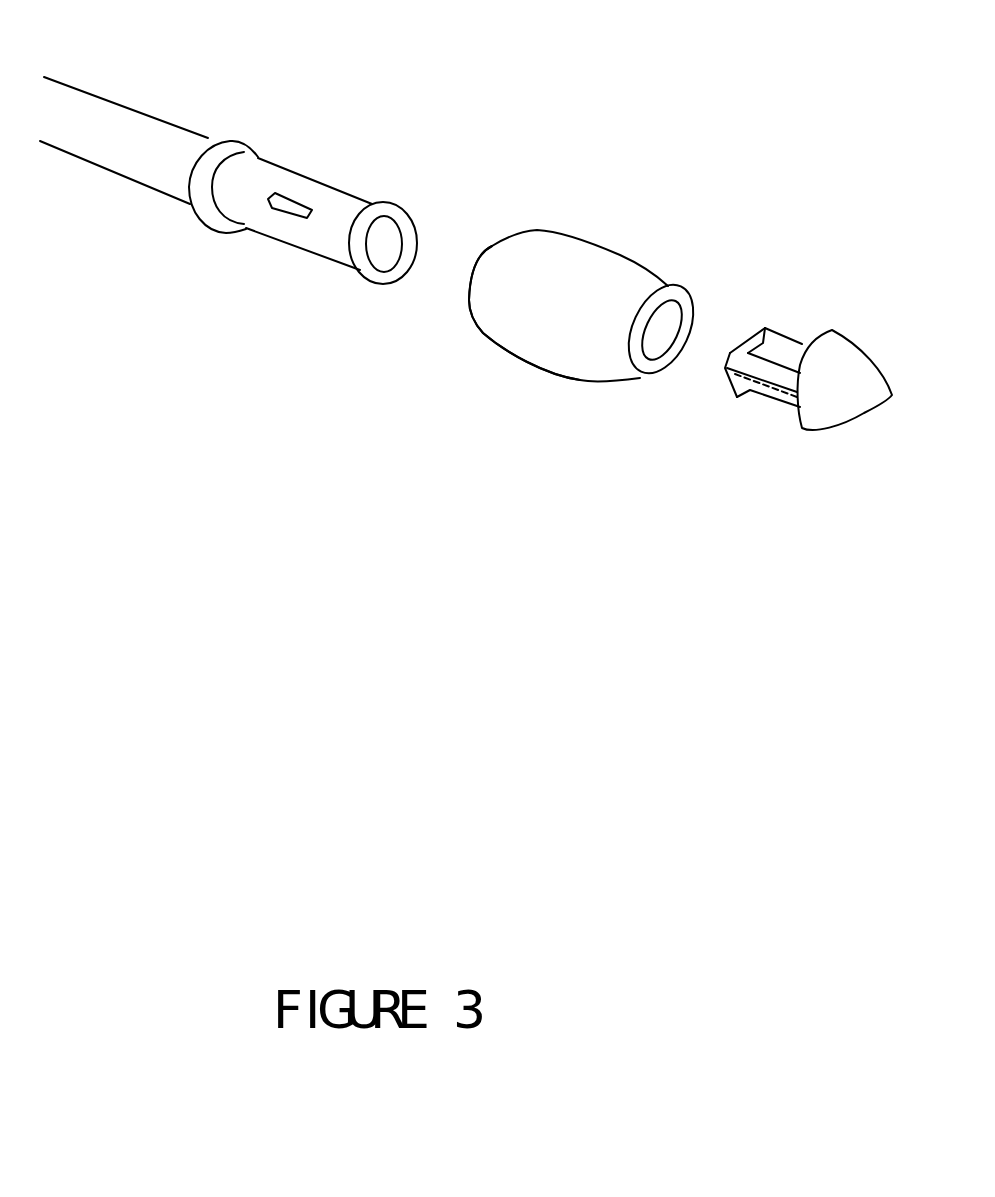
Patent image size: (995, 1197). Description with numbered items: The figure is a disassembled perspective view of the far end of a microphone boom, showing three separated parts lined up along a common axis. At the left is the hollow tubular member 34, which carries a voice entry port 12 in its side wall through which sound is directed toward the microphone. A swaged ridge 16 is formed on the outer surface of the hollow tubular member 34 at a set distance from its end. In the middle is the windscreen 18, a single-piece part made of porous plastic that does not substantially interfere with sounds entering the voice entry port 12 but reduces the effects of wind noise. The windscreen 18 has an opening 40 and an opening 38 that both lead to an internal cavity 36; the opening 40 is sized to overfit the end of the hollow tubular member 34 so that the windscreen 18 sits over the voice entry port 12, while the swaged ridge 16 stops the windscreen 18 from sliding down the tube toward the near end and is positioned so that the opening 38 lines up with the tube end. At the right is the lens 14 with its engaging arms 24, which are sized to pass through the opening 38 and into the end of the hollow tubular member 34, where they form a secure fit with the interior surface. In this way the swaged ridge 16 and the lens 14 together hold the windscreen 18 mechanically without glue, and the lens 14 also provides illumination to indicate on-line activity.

The hollow tubular member 34 is at (130, 95).
The swaged ridge 16 is at (210, 237).
The voice entry port 12 is at (280, 225).
The windscreen 18 is at (583, 222).
The opening 40 is at (462, 248).
The opening 38 is at (706, 311).
The cavity 36 is at (657, 341).
The lens 14 is at (845, 380).
The engaging arms 24 is at (761, 402).